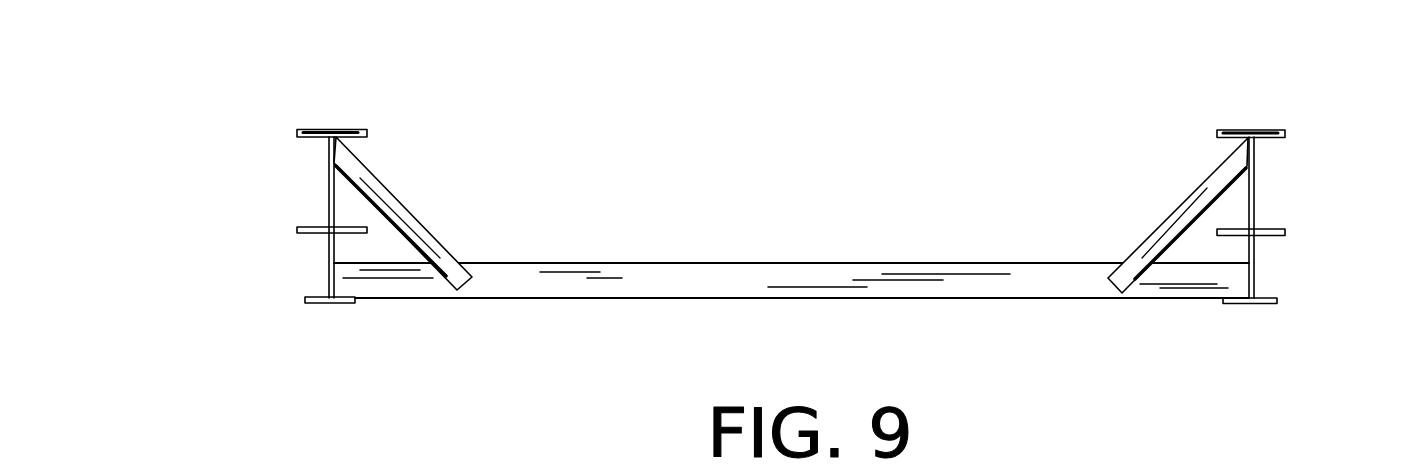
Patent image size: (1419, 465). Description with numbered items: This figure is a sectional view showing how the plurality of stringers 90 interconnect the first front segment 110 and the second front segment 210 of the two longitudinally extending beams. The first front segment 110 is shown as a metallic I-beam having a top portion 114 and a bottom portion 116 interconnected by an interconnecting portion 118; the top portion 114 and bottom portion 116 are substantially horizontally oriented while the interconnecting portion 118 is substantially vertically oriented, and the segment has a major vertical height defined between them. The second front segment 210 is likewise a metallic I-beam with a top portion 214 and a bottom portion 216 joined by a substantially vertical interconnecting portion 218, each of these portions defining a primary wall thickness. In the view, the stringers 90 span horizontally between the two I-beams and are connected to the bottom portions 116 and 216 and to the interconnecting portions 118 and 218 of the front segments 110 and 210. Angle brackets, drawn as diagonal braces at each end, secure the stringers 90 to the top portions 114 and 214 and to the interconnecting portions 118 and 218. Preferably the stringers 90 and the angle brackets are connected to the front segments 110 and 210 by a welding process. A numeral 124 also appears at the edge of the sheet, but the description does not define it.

The stringers 90 is at (812, 275).
The first front segment 110 is at (330, 178).
The top portion 114 is at (332, 130).
The bottom portion 116 is at (333, 303).
The interconnecting portion 118 is at (329, 270).
The partially shown component 124 is at (401, 459).
The second front segment 210 is at (1254, 183).
The top portion 214 is at (1250, 135).
The bottom portion 216 is at (1262, 305).
The interconnecting portion 218 is at (1254, 275).